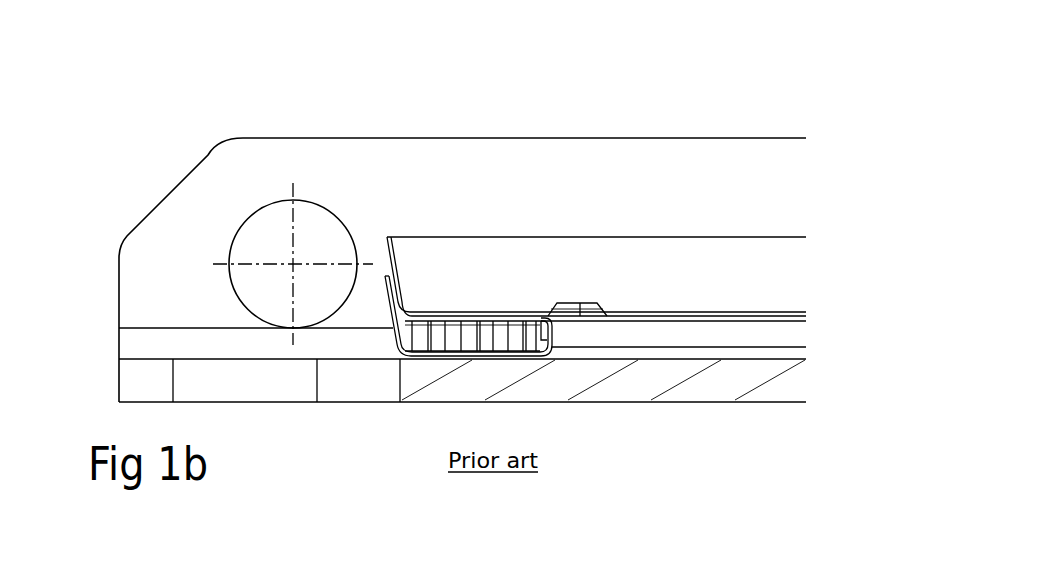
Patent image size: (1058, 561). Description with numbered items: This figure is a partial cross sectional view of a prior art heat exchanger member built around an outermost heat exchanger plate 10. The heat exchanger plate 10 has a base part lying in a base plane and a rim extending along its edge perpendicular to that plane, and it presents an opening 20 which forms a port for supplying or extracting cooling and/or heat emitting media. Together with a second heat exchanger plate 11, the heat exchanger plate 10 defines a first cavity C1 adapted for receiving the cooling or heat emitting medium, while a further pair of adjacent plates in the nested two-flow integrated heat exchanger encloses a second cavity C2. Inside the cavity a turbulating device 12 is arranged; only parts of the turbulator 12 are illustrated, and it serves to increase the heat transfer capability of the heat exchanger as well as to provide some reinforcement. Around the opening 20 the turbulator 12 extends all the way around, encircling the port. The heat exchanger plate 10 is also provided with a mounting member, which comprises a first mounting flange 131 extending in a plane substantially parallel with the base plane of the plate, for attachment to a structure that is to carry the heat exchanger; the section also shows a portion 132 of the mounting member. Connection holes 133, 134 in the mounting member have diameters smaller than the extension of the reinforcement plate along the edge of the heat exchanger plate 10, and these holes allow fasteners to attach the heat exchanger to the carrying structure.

The heat exchanger plate 10 is at (453, 355).
The second heat exchanger plate 11 is at (527, 312).
The turbulating device 12 is at (468, 330).
The opening 20 is at (658, 340).
The first mounting flange 131 is at (533, 385).
The upper housing portion 132 is at (383, 162).
The connection hole 133 is at (247, 380).
The connection hole 134 is at (308, 212).
The first cavity C1 is at (518, 337).
The second cavity C2 is at (425, 295).